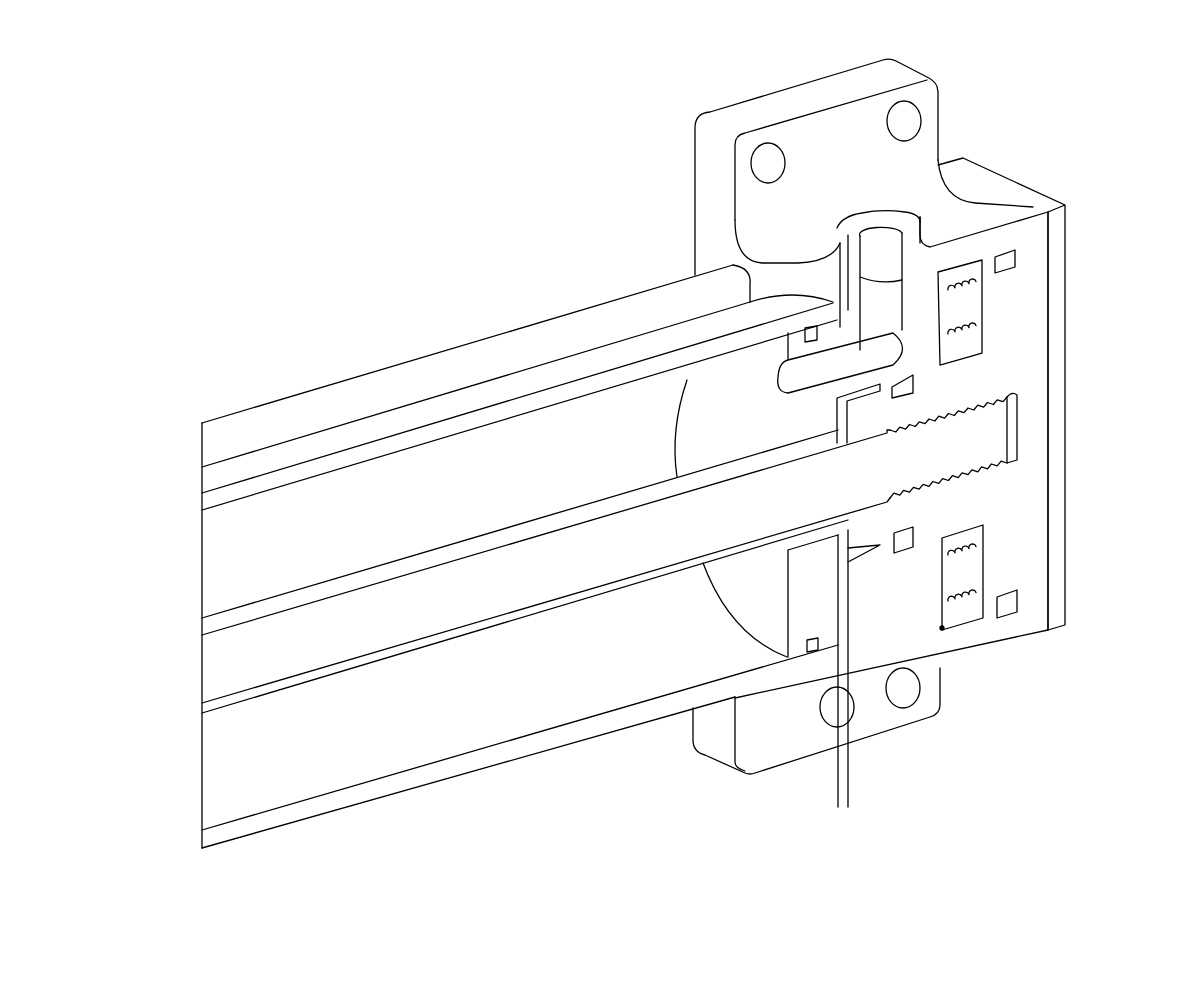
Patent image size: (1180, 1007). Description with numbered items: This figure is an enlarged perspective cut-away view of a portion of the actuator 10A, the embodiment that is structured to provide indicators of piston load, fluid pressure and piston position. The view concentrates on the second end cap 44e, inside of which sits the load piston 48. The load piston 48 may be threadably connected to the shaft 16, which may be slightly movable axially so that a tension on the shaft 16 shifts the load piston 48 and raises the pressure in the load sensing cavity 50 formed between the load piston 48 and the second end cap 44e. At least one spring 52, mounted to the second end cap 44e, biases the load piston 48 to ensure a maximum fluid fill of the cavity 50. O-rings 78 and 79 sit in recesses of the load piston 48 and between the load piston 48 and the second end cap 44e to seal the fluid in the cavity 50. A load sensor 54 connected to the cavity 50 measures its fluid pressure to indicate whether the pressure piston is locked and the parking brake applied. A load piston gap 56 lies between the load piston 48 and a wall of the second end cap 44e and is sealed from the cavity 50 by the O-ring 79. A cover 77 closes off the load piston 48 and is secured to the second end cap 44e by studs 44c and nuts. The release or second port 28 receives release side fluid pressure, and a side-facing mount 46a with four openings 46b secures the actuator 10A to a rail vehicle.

The actuator 10A is at (383, 150).
The shaft 16 is at (545, 517).
The release or second port 28 is at (848, 235).
The studs 44c is at (323, 383).
The second end cap 44e is at (930, 716).
The side-facing mount 46a is at (938, 117).
The openings 46b is at (762, 160).
The load piston 48 is at (1033, 330).
The load sensing cavity 50 is at (1005, 571).
The spring 52 is at (970, 325).
The load sensor 54 is at (942, 628).
The load piston gap 56 is at (765, 820).
The cover 77 is at (1068, 497).
The O-ring 78 is at (1010, 260).
The O-ring 79 is at (913, 383).